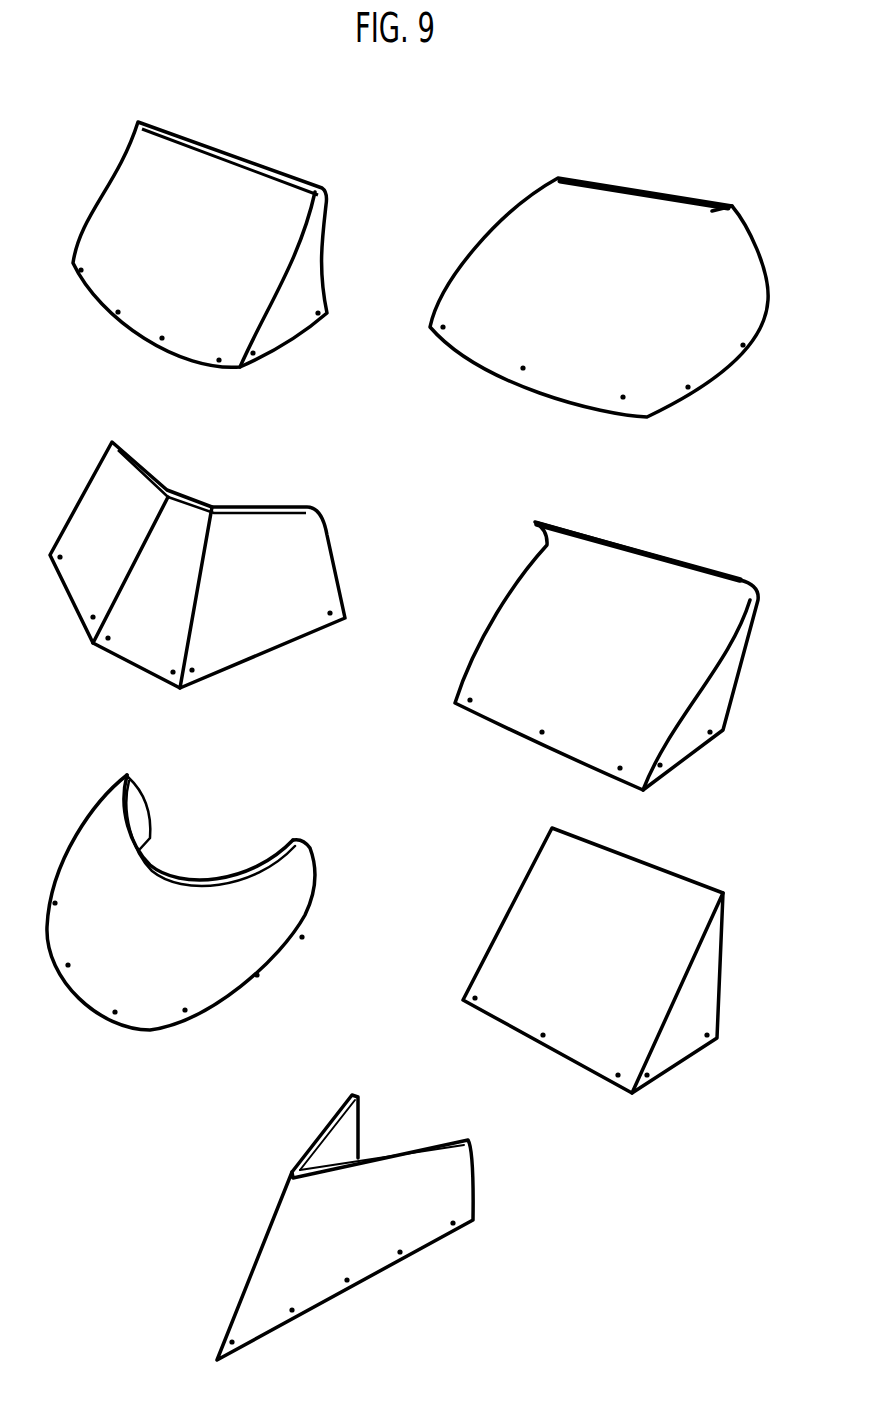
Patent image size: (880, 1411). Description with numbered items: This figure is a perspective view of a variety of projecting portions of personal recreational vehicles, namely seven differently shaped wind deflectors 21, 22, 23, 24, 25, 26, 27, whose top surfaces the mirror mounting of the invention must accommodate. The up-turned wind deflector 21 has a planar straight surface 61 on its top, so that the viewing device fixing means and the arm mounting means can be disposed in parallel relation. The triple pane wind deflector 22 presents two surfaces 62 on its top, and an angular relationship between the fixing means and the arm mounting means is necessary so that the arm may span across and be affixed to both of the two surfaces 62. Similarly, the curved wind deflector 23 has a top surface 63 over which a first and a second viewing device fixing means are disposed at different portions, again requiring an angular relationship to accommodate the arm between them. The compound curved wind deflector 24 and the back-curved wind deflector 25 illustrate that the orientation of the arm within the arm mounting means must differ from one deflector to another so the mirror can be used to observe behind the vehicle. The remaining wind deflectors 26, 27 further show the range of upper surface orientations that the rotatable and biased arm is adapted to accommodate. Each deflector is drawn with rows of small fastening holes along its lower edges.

The up-turned wind deflector 21 is at (295, 327).
The planar straight surface 61 is at (242, 160).
The triple pane wind deflector 22 is at (298, 557).
The two surfaces 62 is at (238, 507).
The curved wind deflector 23 is at (150, 902).
The top surface 63 is at (125, 832).
The compound curved wind deflector 24 is at (582, 385).
The back-curved wind deflector 25 is at (588, 562).
The wind deflector 26 is at (600, 900).
The wind deflector 27 is at (452, 1192).